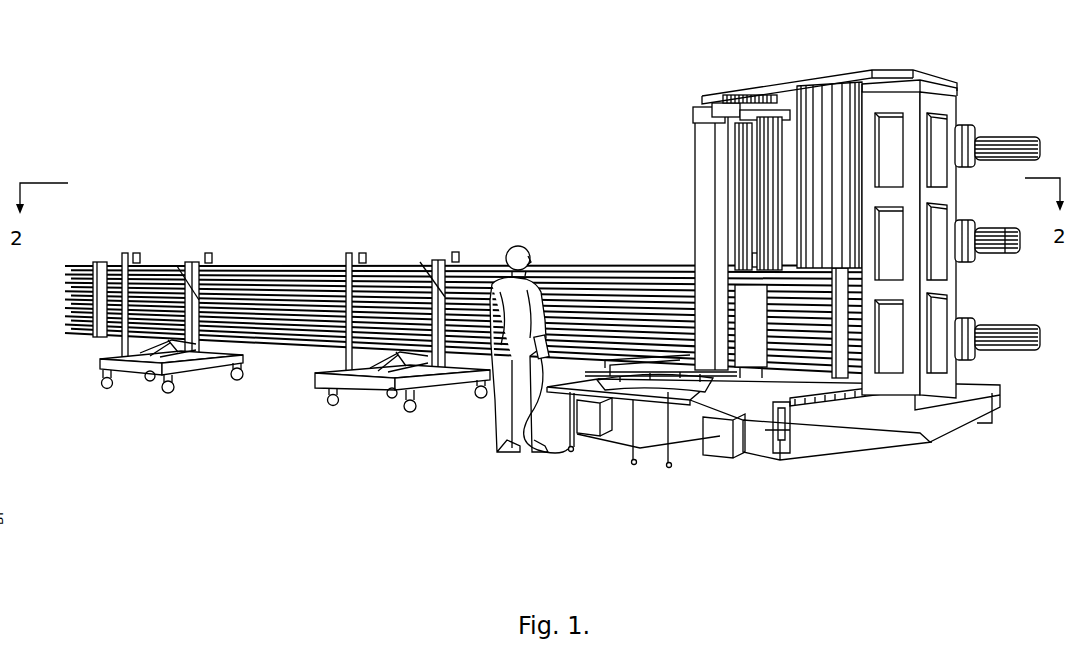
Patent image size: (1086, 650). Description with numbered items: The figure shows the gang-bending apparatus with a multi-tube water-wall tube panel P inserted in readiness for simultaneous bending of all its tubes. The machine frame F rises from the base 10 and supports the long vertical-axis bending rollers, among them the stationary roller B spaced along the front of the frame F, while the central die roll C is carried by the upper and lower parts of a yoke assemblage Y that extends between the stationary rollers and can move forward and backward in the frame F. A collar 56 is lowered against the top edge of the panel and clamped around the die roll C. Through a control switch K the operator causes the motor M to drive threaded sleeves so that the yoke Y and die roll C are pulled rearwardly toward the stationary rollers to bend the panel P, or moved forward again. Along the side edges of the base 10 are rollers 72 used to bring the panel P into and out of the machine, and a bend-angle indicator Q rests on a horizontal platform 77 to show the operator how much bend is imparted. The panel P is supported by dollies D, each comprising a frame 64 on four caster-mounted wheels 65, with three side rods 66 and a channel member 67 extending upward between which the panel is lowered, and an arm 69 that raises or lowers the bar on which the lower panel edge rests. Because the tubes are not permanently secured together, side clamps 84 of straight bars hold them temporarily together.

The tube panel P is at (294, 258).
The side clamp 84 is at (103, 270).
The side rods 66 is at (136, 253).
The channel member 67 is at (193, 262).
The dolly D is at (295, 390).
The frame 64 is at (318, 382).
The arm 69 is at (398, 356).
The caster-mounted wheels 65 is at (168, 394).
The control switch K is at (542, 336).
The horizontal platform 77 is at (613, 386).
The bend-angle indicator Q is at (651, 380).
The base 10 is at (863, 440).
The rollers 72 is at (833, 400).
The yoke assemblage Y is at (696, 190).
The collar 56 is at (752, 262).
The central die roll C is at (762, 133).
The roller B is at (837, 115).
The machine frame F is at (970, 281).
The motor M is at (998, 224).